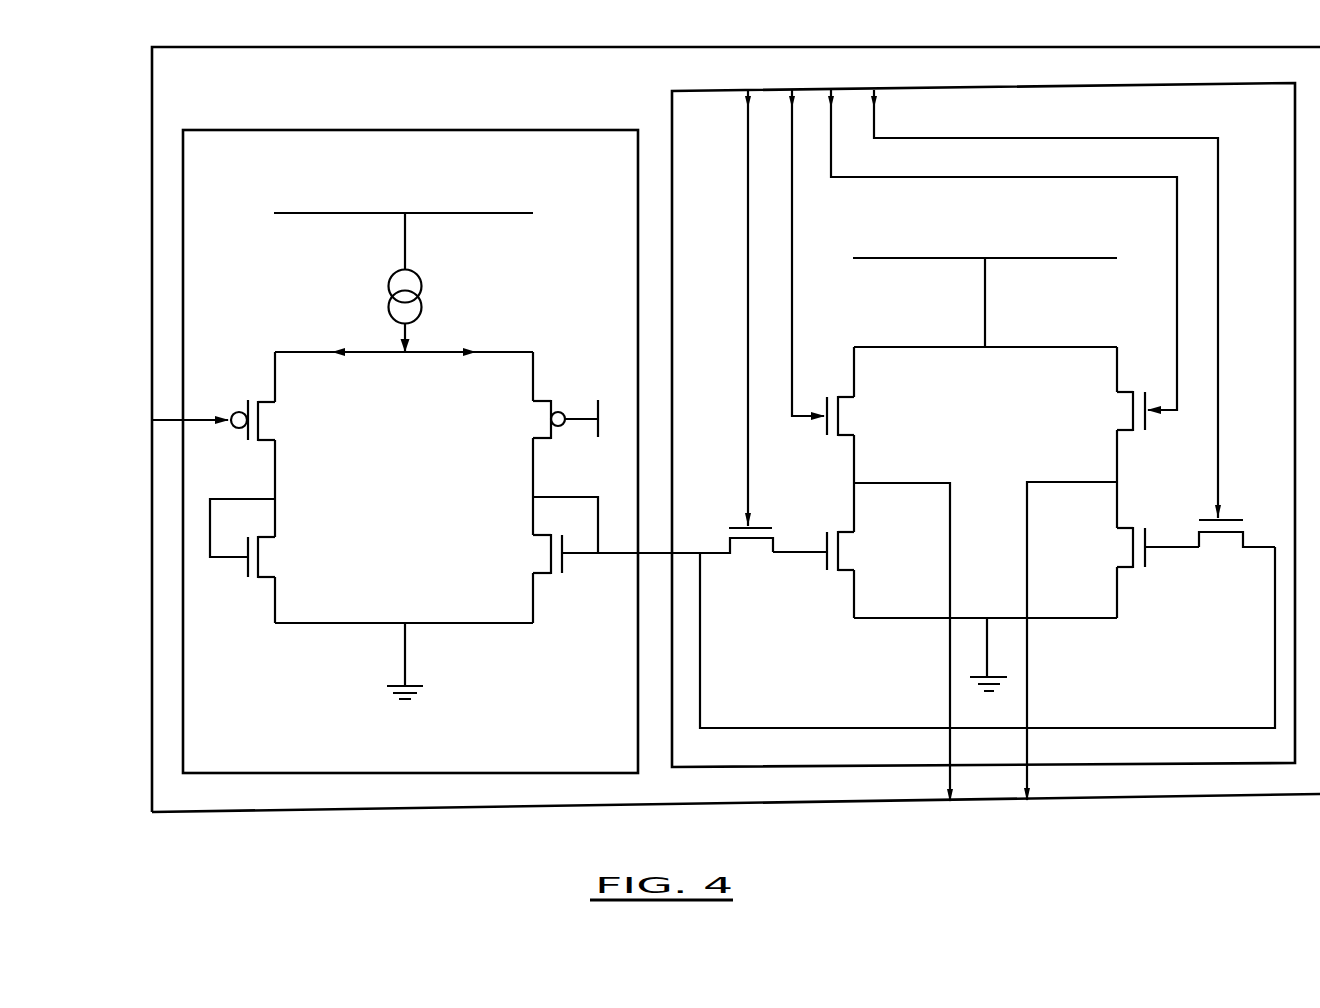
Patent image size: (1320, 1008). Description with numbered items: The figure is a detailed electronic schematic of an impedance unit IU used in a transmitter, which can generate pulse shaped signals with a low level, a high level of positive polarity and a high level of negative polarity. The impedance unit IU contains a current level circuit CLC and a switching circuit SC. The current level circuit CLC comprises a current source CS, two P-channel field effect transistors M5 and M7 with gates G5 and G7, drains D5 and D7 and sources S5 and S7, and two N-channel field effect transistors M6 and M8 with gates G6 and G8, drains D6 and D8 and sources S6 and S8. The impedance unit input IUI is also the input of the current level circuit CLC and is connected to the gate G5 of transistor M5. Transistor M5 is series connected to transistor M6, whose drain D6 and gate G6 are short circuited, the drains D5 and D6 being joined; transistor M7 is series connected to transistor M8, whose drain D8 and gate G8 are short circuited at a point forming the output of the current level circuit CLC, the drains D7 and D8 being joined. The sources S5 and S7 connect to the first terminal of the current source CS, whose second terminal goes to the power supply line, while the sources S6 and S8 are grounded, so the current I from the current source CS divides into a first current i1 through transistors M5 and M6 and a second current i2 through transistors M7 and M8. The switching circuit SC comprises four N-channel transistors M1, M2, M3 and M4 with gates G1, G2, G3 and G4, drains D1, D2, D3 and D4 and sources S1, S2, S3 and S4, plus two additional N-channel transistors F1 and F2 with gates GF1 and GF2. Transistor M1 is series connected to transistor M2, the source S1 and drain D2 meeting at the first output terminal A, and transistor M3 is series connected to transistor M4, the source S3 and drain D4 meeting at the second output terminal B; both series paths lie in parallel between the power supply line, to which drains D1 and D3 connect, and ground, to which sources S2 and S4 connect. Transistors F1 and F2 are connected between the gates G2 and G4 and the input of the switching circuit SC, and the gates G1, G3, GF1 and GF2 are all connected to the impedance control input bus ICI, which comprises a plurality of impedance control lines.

The impedance unit IU is at (736, 429).
The current level circuit CLC is at (410, 451).
The switching circuit SC is at (983, 425).
The current source CS is at (423, 297).
The current I is at (414, 337).
The first current i1 is at (336, 338).
The second current i2 is at (473, 338).
The impedance unit input IUI is at (173, 421).
The impedance control input bus ICI is at (981, 293).
The first N-channel field effect transistor M1 is at (867, 416).
The second N-channel field effect transistor M2 is at (867, 551).
The third N-channel field effect transistor M3 is at (1103, 412).
The fourth N-channel field effect transistor M4 is at (1103, 547).
The fifth P-channel field effect transistor M5 is at (288, 421).
The sixth N-channel field effect transistor M6 is at (288, 557).
The seventh P-channel field effect transistor M7 is at (522, 419).
The eighth N-channel field effect transistor M8 is at (522, 554).
The gate of transistor M1 G1 is at (814, 412).
The gate of transistor M2 G2 is at (800, 547).
The gate of transistor M3 G3 is at (1170, 416).
The gate of transistor M4 G4 is at (1172, 543).
The gate of transistor M5 G5 is at (228, 414).
The gate of transistor M6 G6 is at (242, 542).
The gate of transistor M7 G7 is at (574, 410).
The gate of transistor M8 G8 is at (631, 542).
The drain of transistor M1 D1 is at (865, 385).
The drain of transistor M2 D2 is at (865, 520).
The drain of transistor M3 D3 is at (1105, 385).
The drain of transistor M4 D4 is at (1105, 520).
The drain of transistor M5 D5 is at (285, 453).
The drain of transistor M6 D6 is at (285, 524).
The drain of transistor M7 D7 is at (524, 452).
The drain of transistor M8 D8 is at (524, 524).
The source of transistor M1 S1 is at (863, 448).
The source of transistor M2 S2 is at (863, 584).
The source of transistor M3 S3 is at (1105, 446).
The source of transistor M4 S4 is at (1105, 582).
The source of transistor M5 S5 is at (284, 389).
The source of transistor M6 S6 is at (284, 590).
The source of transistor M7 S7 is at (524, 388).
The source of transistor M8 S8 is at (524, 588).
The additional N-channel field effect transistor F1 is at (736, 558).
The additional N-channel field effect transistor F2 is at (1237, 553).
The gate of transistor F1 GF1 is at (739, 516).
The gate of transistor F2 GF2 is at (1237, 507).
The first output terminal A is at (914, 642).
The second output terminal B is at (1070, 641).